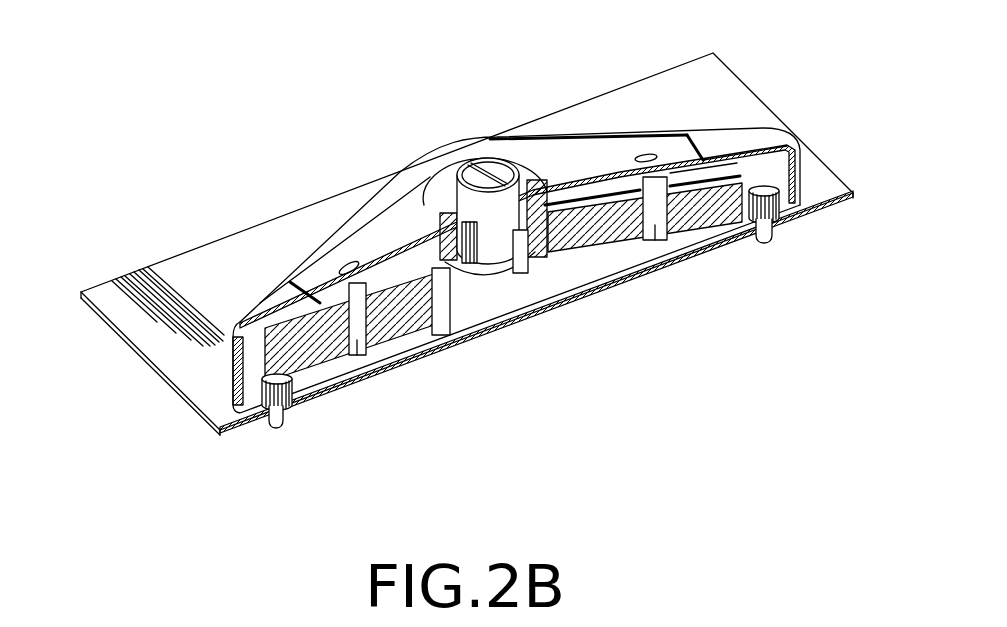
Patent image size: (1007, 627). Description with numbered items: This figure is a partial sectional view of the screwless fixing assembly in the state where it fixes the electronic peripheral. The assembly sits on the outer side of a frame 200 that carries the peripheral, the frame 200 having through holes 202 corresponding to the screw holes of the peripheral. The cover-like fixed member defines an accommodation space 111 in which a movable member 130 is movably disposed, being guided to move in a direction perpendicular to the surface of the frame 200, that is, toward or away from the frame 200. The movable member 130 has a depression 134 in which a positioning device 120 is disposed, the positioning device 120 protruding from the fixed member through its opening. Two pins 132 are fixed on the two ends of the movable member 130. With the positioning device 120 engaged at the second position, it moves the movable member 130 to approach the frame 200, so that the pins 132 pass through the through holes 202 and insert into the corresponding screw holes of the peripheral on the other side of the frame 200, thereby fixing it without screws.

The frame 200 is at (237, 263).
The accommodation space 111 is at (273, 330).
The positioning device 120 is at (482, 168).
The movable member 130 is at (600, 218).
The depression 134 is at (452, 273).
The pins 132 is at (285, 422).
The through holes 202 is at (276, 430).